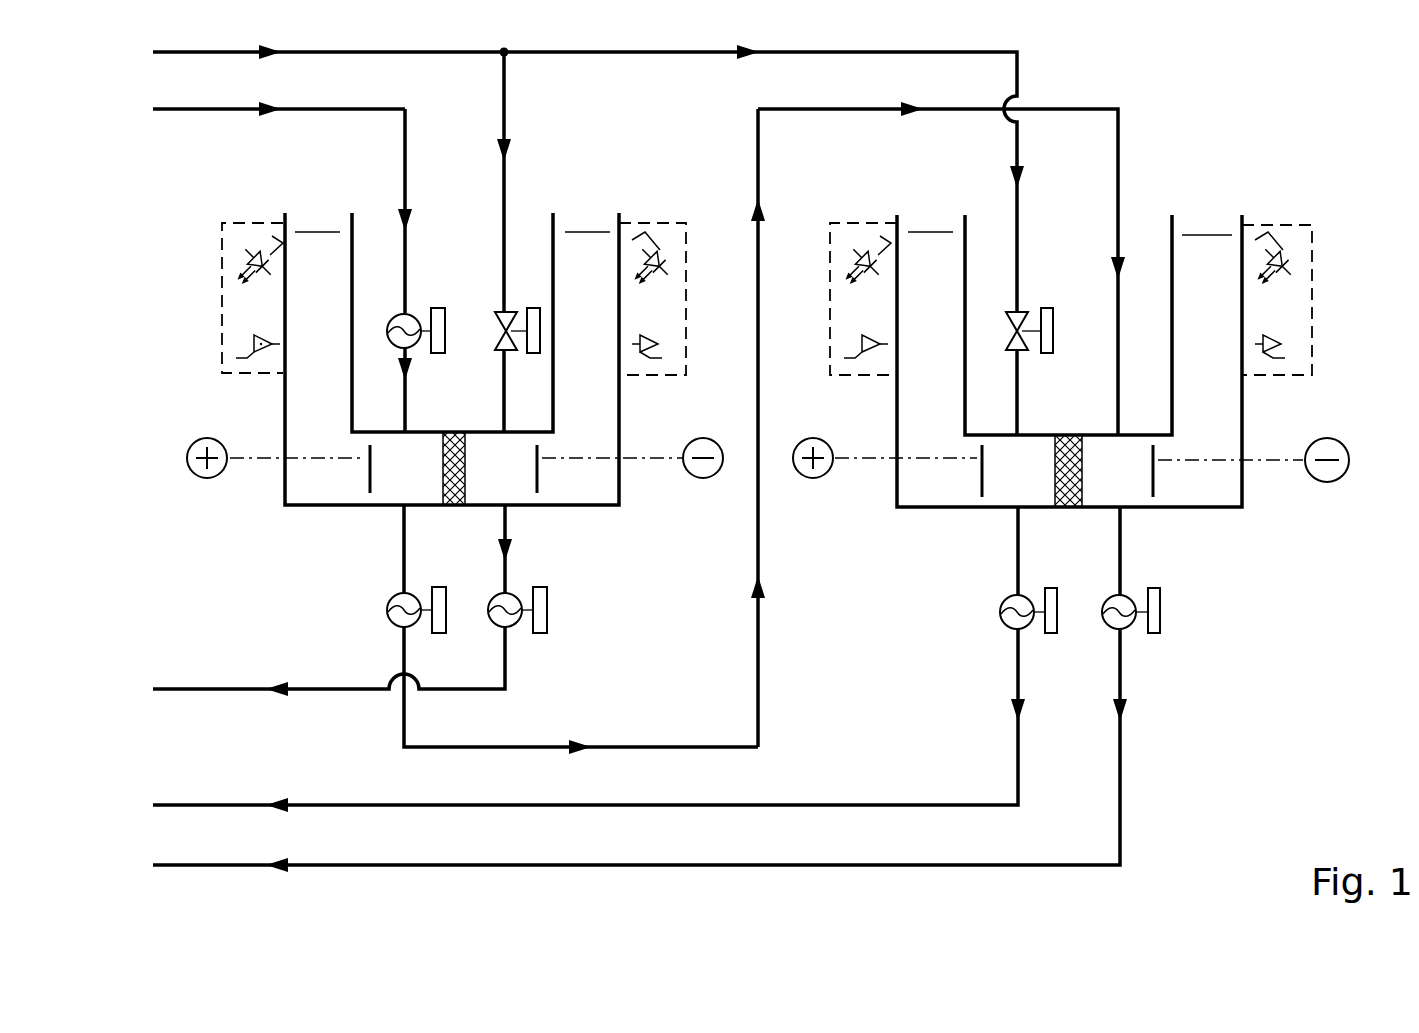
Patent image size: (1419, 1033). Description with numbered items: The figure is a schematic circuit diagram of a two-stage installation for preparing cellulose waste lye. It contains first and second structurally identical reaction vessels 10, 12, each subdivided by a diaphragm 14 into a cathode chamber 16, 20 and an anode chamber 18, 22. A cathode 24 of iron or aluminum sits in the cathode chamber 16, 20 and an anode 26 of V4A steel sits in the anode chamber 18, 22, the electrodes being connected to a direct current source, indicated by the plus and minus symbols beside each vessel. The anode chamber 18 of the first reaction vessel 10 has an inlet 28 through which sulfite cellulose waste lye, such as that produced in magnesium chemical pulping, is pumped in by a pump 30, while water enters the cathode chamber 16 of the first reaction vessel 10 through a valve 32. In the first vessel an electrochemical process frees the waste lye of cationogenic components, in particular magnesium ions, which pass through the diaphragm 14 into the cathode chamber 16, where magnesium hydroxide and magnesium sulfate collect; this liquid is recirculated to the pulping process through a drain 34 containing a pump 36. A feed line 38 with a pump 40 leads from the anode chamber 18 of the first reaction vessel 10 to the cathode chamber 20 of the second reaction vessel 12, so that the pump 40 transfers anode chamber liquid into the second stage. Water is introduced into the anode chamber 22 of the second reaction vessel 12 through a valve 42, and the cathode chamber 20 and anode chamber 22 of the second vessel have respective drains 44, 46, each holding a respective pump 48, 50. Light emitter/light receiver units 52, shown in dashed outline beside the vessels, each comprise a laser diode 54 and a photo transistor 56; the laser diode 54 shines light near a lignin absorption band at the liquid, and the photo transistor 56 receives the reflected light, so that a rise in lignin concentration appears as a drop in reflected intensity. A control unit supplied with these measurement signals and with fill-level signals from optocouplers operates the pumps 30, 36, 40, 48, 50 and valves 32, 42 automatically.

The first reaction vessel 10 is at (282, 490).
The second reaction vessel 12 is at (1245, 493).
The diaphragm 14 is at (450, 506).
The cathode chamber 16 is at (570, 362).
The anode chamber 18 is at (300, 362).
The cathode chamber 20 is at (1193, 360).
The anode chamber 22 is at (915, 360).
The cathode 24 is at (534, 452).
The anode 26 is at (374, 452).
The inlet 28 is at (402, 162).
The pump 30 is at (412, 315).
The valve 32 is at (510, 310).
The drain 34 is at (508, 575).
The pump 36 is at (512, 625).
The feed line 38 is at (760, 684).
The pump 40 is at (392, 600).
The valve 42 is at (1020, 318).
The drain 44 is at (1123, 552).
The drain 46 is at (1021, 552).
The pump 48 is at (1125, 628).
The pump 50 is at (1008, 628).
The light emitter/light receiver unit 52 is at (220, 235).
The laser diode 54 is at (252, 250).
The photo transistor 56 is at (248, 340).